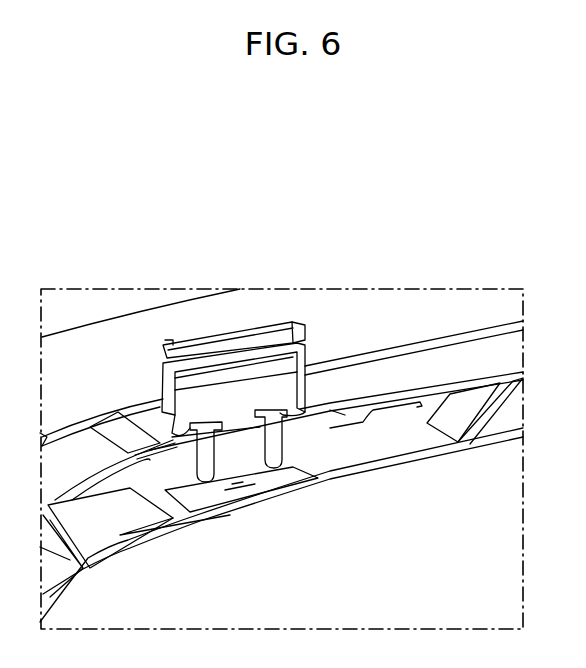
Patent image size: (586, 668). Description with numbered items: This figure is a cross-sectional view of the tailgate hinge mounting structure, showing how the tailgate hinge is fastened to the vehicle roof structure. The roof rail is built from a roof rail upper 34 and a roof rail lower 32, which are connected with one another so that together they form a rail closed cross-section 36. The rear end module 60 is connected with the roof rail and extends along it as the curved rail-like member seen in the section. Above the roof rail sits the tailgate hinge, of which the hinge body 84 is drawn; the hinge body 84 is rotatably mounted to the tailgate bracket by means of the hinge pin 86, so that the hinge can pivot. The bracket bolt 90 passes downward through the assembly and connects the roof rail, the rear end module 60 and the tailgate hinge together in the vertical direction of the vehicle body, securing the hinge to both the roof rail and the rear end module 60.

The hinge body 84 is at (185, 347).
The hinge pin 86 is at (205, 353).
The bracket bolt 90 is at (203, 427).
The roof rail lower 32 is at (177, 508).
The rail closed cross-section 36 is at (238, 486).
The roof rail upper 34 is at (347, 423).
The rear end module 60 is at (437, 474).